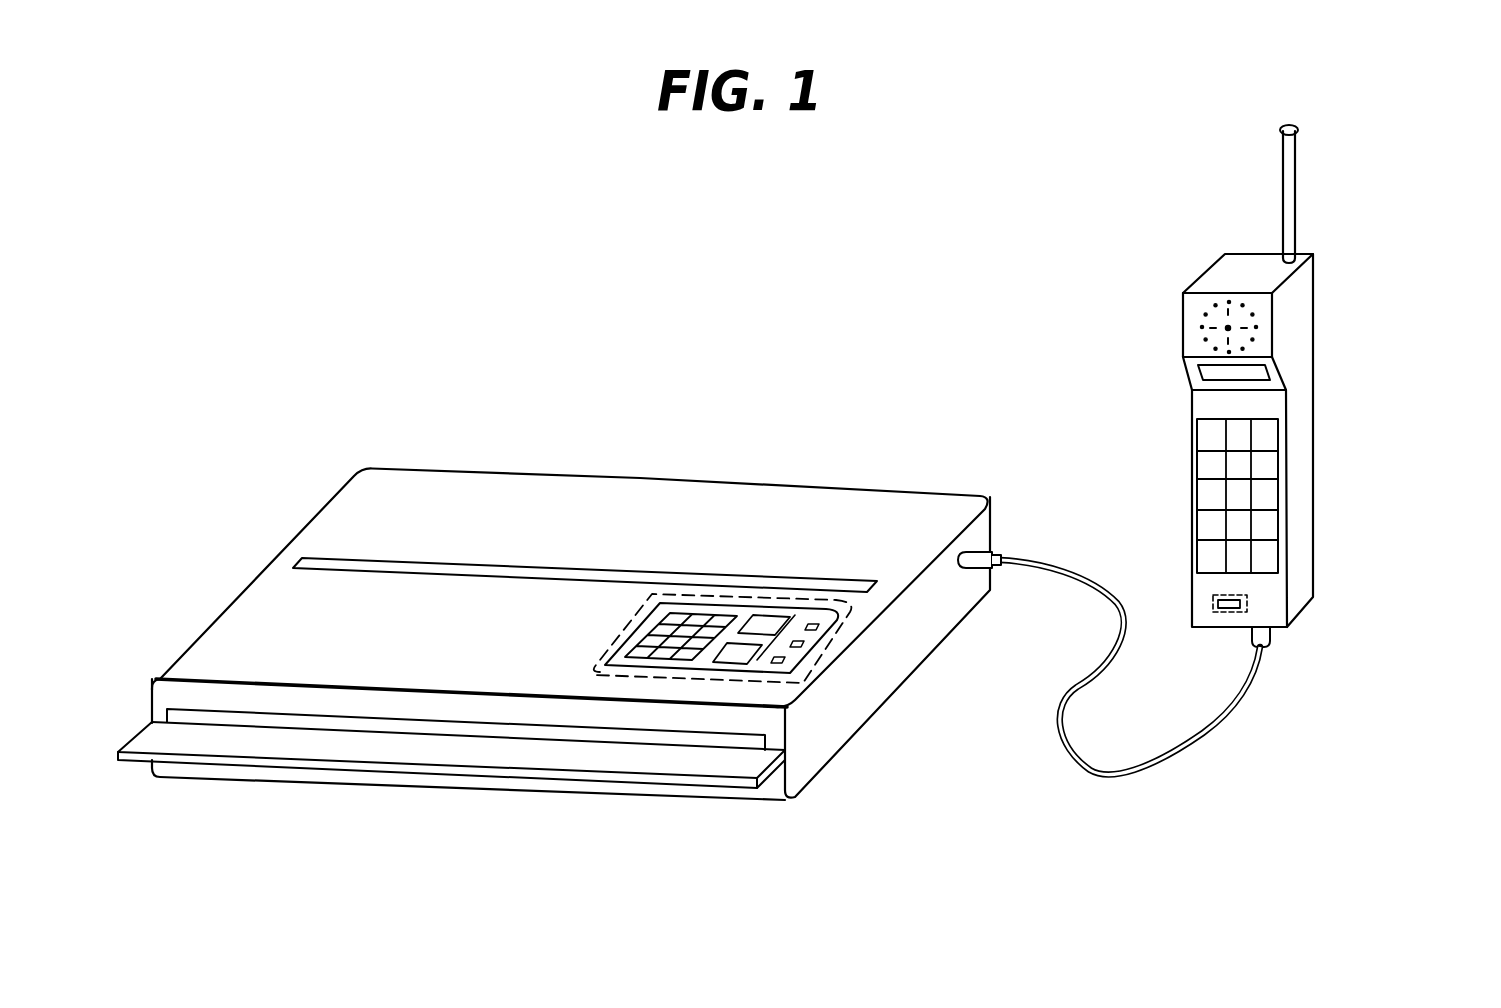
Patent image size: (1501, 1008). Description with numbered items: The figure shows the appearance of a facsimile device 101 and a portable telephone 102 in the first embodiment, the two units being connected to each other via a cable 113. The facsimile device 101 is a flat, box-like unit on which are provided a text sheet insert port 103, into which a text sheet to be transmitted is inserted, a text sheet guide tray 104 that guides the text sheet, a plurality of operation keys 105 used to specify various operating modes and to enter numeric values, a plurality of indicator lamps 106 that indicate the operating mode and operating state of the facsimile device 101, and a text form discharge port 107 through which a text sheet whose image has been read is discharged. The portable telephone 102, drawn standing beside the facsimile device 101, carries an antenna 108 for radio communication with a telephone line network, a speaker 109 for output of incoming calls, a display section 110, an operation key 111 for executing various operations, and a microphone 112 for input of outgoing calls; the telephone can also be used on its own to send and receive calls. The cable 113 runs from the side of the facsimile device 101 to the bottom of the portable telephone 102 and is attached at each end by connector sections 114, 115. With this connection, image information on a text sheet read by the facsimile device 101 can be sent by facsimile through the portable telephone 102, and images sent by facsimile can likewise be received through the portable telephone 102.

The facsimile device 101 is at (660, 474).
The portable telephone 102 is at (1323, 338).
The text sheet insert port 103 is at (342, 726).
The text sheet guide tray 104 is at (437, 756).
The operation keys 105 is at (700, 672).
The indicator lamps 106 is at (808, 653).
The text form discharge port 107 is at (470, 556).
The antenna 108 is at (1291, 153).
The speaker 109 is at (1203, 335).
The display section 110 is at (1207, 377).
The operation key 111 is at (1279, 463).
The microphone 112 is at (1244, 600).
The cable 113 is at (1137, 780).
The connector section 114 is at (1000, 553).
The connector section 115 is at (1265, 640).